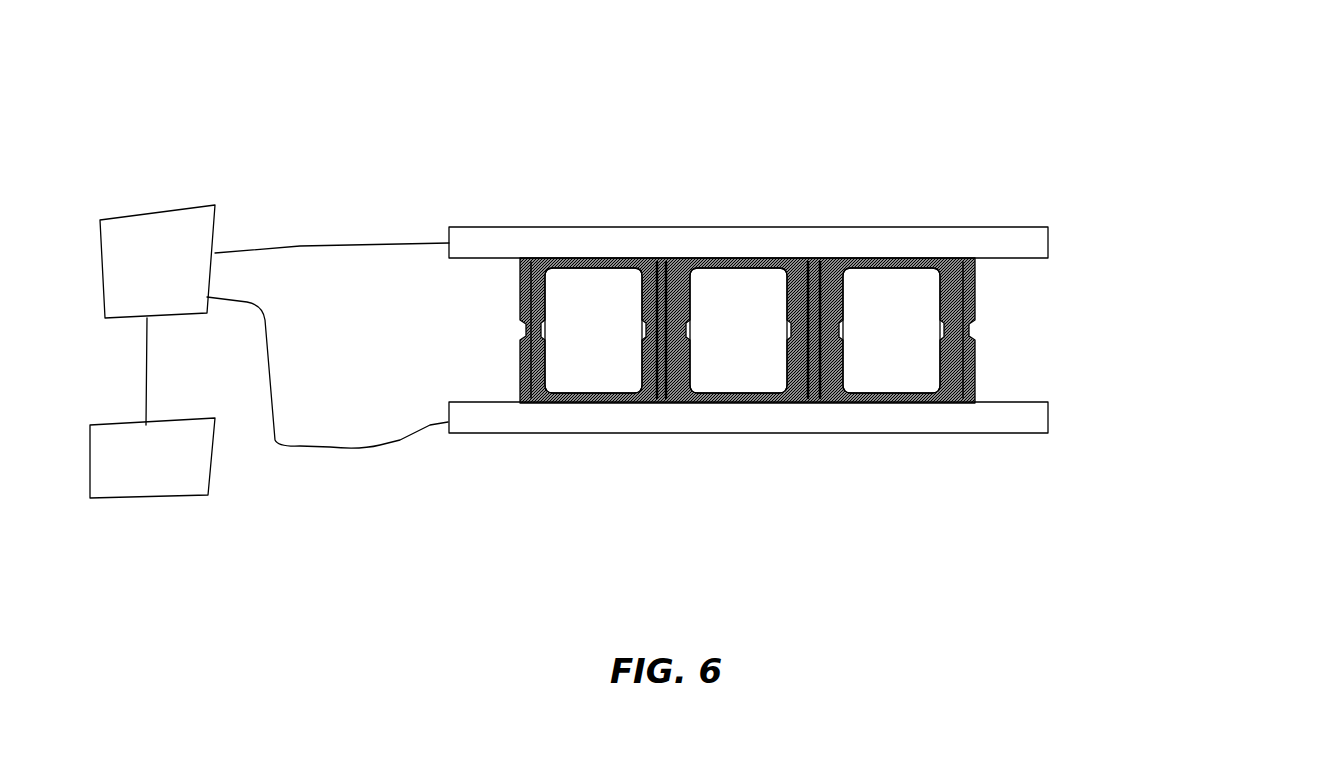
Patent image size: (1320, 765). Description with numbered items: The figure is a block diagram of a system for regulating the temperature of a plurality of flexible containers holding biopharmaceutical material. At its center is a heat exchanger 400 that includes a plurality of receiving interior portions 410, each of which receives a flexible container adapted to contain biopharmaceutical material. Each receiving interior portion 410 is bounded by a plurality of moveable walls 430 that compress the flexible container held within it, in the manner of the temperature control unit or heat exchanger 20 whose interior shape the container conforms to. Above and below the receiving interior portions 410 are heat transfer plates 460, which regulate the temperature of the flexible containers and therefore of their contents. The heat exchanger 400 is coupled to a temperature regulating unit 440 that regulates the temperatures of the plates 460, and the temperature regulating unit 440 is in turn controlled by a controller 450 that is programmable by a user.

The heat exchanger 400 is at (1157, 167).
The receiving interior portion 410 is at (890, 232).
The heat exchanger 20 is at (594, 392).
The moveable wall 430 is at (520, 375).
The temperature regulating unit 440 is at (274, 326).
The controller 450 is at (152, 458).
The heat transfer plate 460 is at (1043, 247).